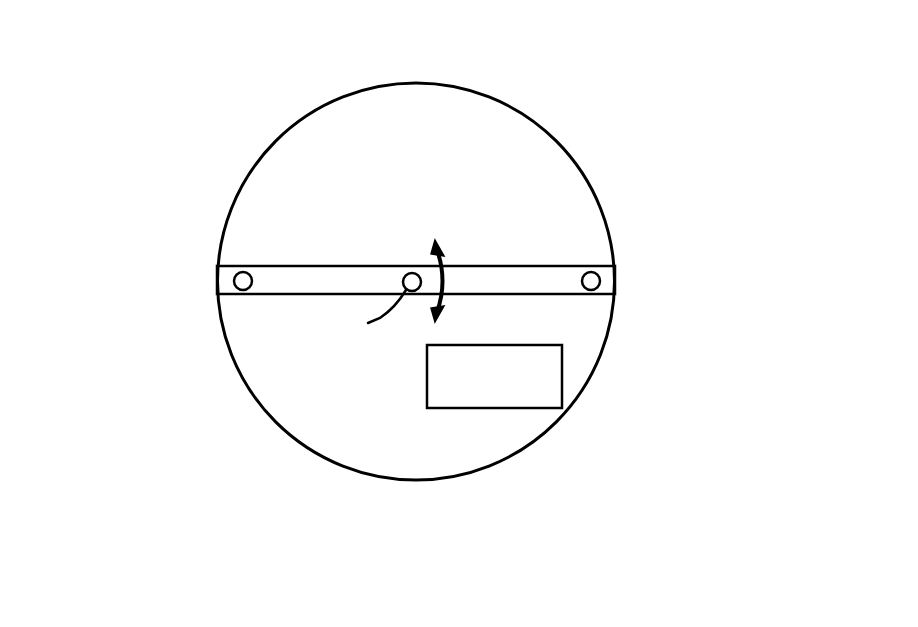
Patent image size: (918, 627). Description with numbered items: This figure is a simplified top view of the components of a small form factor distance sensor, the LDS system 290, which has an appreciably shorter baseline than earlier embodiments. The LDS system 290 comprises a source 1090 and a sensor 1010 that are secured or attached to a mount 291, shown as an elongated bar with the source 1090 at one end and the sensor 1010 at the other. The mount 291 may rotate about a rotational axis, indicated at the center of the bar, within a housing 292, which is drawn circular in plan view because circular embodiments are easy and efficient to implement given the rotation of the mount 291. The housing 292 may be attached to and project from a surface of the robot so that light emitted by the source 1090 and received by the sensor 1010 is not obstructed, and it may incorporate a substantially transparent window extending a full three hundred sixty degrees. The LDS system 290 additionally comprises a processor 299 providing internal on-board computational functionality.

The LDS system 290 is at (367, 83).
The mount 291 is at (487, 266).
The housing 292 is at (290, 438).
The processor 299 is at (476, 397).
The sensor 1010 is at (236, 284).
The source 1090 is at (599, 287).